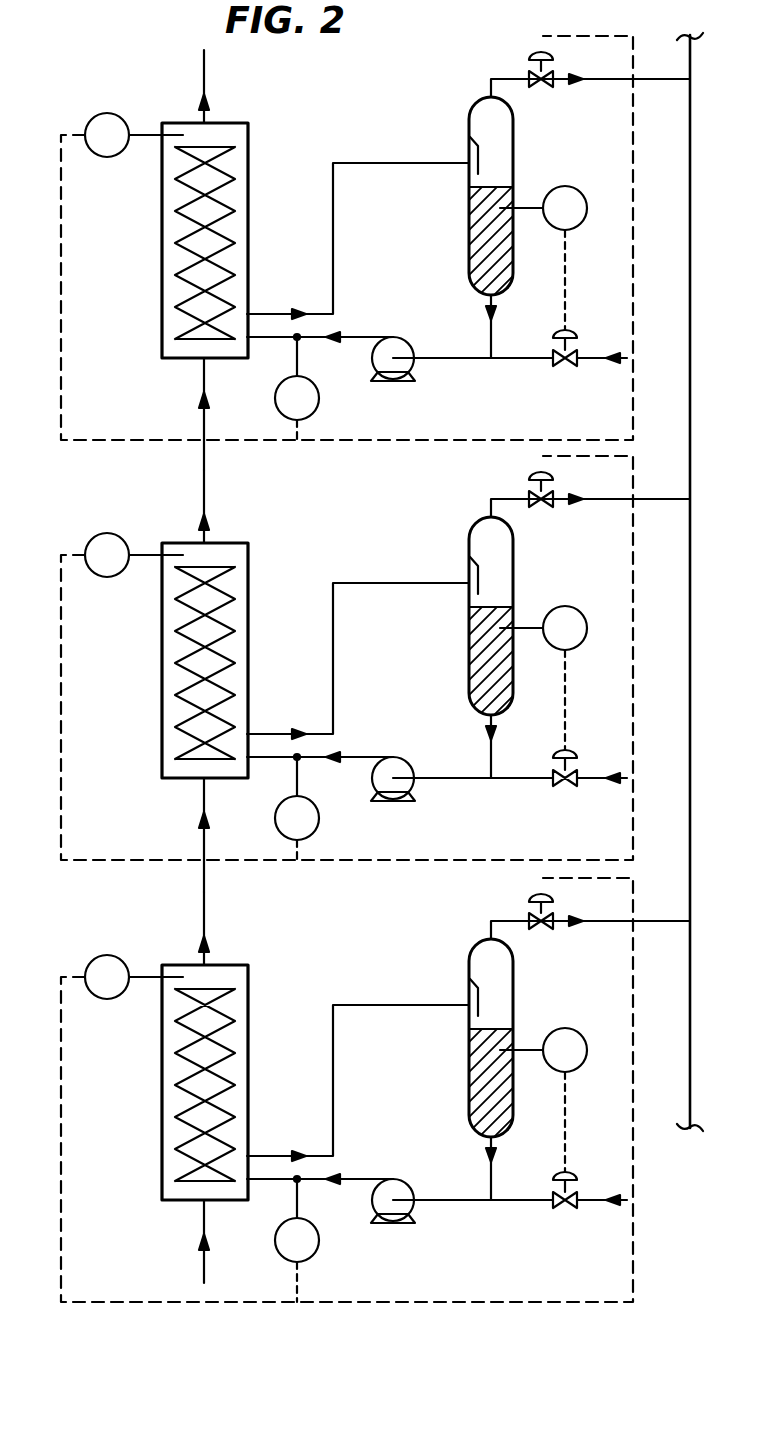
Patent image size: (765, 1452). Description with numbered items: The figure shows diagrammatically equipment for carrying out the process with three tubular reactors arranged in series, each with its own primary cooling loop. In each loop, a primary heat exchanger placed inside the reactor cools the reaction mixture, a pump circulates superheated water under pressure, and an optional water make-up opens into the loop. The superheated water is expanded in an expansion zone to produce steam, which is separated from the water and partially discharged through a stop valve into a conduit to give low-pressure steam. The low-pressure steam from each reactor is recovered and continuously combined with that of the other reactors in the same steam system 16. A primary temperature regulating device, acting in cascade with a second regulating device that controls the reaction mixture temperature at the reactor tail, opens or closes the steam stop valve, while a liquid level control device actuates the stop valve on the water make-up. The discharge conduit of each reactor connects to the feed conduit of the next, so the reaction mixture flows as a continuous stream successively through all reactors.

The steam system 16 is at (693, 149).